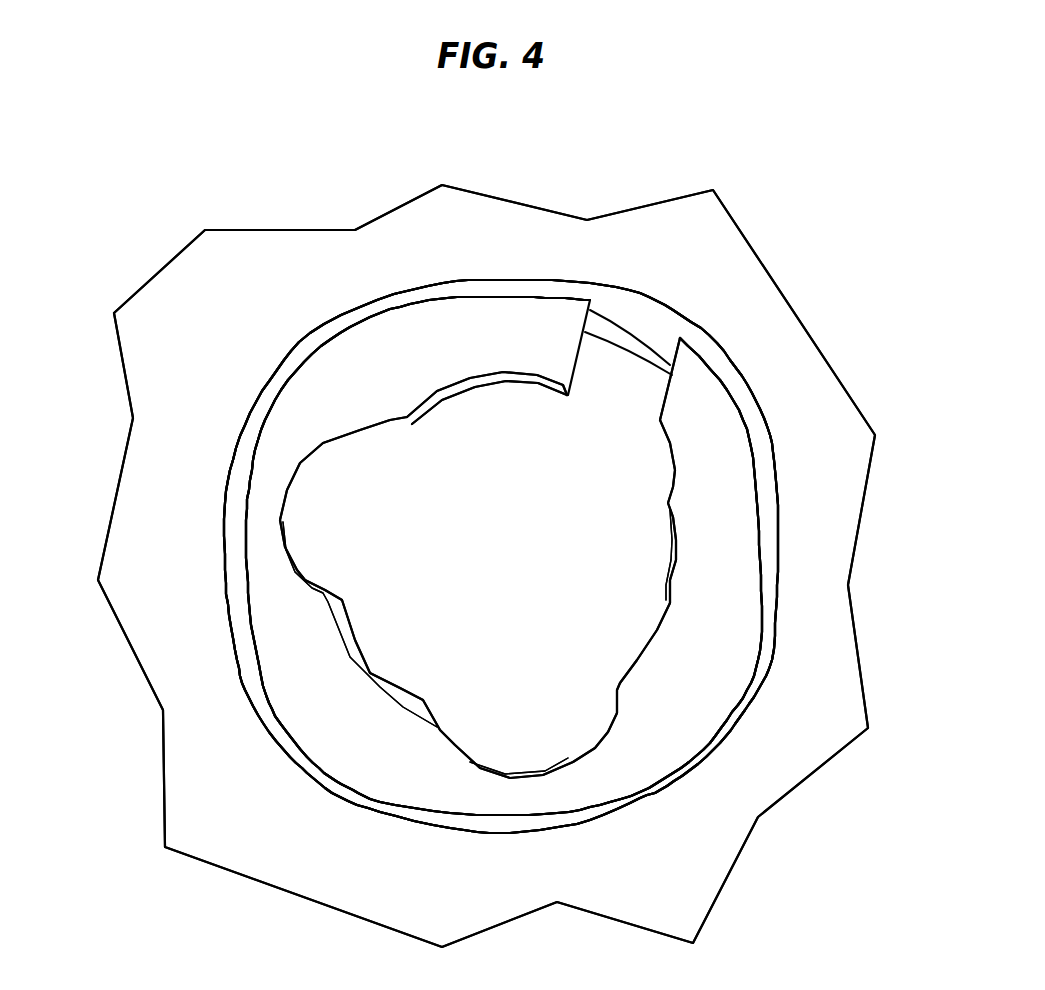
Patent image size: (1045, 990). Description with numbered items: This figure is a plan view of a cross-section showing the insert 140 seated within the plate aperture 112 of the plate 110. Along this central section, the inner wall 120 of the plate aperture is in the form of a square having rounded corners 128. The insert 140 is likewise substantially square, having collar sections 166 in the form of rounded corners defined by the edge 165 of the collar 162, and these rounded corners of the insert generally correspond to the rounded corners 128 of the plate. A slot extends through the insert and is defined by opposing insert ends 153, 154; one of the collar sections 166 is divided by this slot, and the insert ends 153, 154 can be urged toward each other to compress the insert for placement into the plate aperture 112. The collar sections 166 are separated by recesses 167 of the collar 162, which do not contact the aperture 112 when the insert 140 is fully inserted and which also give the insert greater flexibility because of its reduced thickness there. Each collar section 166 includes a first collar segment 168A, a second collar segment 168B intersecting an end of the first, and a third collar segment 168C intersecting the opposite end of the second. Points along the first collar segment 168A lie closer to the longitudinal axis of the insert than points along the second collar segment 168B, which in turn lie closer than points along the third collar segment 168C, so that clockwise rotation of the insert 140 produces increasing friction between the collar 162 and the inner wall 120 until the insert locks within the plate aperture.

The plate 110 is at (800, 298).
The plate aperture 112 is at (238, 707).
The inner wall 120 is at (767, 488).
The rounded corners 128 is at (290, 353).
The insert 140 is at (633, 628).
The insert end 153 is at (570, 360).
The insert end 154 is at (663, 380).
The collar 162 is at (258, 650).
The edge 165 is at (243, 568).
The collar sections 166 is at (303, 765).
The recesses 167 is at (760, 543).
The first collar segment 168A is at (658, 787).
The second collar segment 168B is at (717, 746).
The third collar segment 168C is at (753, 677).